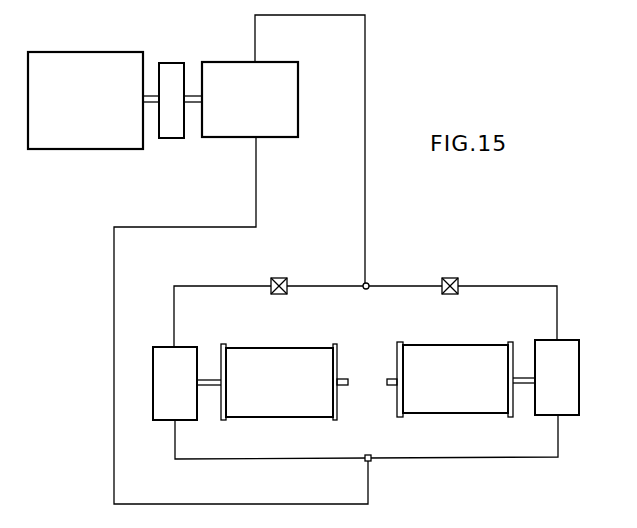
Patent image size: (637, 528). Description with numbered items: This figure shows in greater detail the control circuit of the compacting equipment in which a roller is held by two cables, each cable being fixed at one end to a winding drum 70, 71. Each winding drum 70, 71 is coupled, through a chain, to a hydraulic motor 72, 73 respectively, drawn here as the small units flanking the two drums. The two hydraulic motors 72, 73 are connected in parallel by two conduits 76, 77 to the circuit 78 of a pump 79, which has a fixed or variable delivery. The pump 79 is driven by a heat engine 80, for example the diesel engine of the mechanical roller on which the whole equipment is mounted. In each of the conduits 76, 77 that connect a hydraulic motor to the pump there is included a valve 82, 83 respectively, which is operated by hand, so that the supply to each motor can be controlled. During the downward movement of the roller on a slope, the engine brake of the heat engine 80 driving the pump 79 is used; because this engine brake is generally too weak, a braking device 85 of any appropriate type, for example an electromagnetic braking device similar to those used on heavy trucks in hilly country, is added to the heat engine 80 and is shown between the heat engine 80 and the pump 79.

The winding drum 70 is at (282, 391).
The winding drum 71 is at (463, 388).
The hydraulic motor 72 is at (165, 391).
The hydraulic motor 73 is at (568, 387).
The conduit 76 is at (269, 308).
The conduit 77 is at (461, 303).
The circuit 78 is at (321, 150).
The pump 79 is at (261, 104).
The heat engine 80 is at (86, 105).
The valve 82 is at (278, 276).
The valve 83 is at (449, 276).
The braking device 85 is at (171, 63).